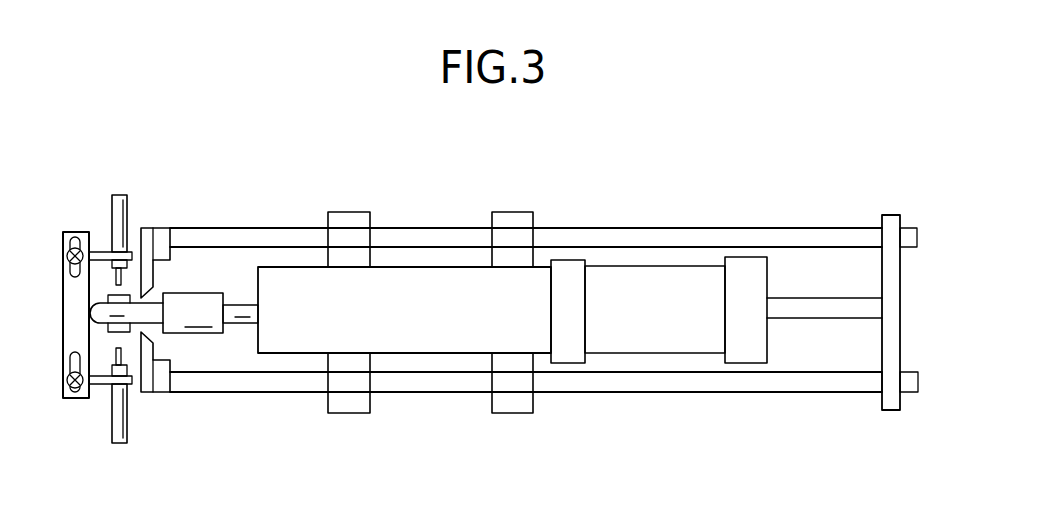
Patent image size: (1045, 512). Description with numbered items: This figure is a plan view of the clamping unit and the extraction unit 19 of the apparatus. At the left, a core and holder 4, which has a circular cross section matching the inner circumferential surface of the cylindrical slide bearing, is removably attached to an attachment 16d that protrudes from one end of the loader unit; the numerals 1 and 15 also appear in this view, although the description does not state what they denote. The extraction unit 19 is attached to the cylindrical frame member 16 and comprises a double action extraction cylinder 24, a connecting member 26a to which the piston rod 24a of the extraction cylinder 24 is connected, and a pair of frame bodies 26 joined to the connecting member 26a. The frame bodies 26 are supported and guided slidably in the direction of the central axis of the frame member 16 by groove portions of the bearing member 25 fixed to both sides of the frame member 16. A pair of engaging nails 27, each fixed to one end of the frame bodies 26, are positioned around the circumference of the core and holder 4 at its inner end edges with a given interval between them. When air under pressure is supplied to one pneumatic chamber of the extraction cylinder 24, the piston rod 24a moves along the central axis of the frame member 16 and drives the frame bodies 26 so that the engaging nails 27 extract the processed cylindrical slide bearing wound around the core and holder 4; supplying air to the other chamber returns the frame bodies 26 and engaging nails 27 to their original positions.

The shaft 1 is at (113, 328).
The core and holder 4 is at (98, 252).
The mounting bracket 15 is at (72, 222).
The frame member 16 is at (428, 358).
The attachment 16d is at (202, 326).
The extraction unit 19 is at (733, 220).
The extraction cylinder 24 is at (637, 303).
The piston rod 24a is at (798, 308).
The bearing member 25 is at (345, 222).
The frame bodies 26 is at (587, 237).
The connecting member 26a is at (893, 397).
The engaging nails 27 is at (147, 237).